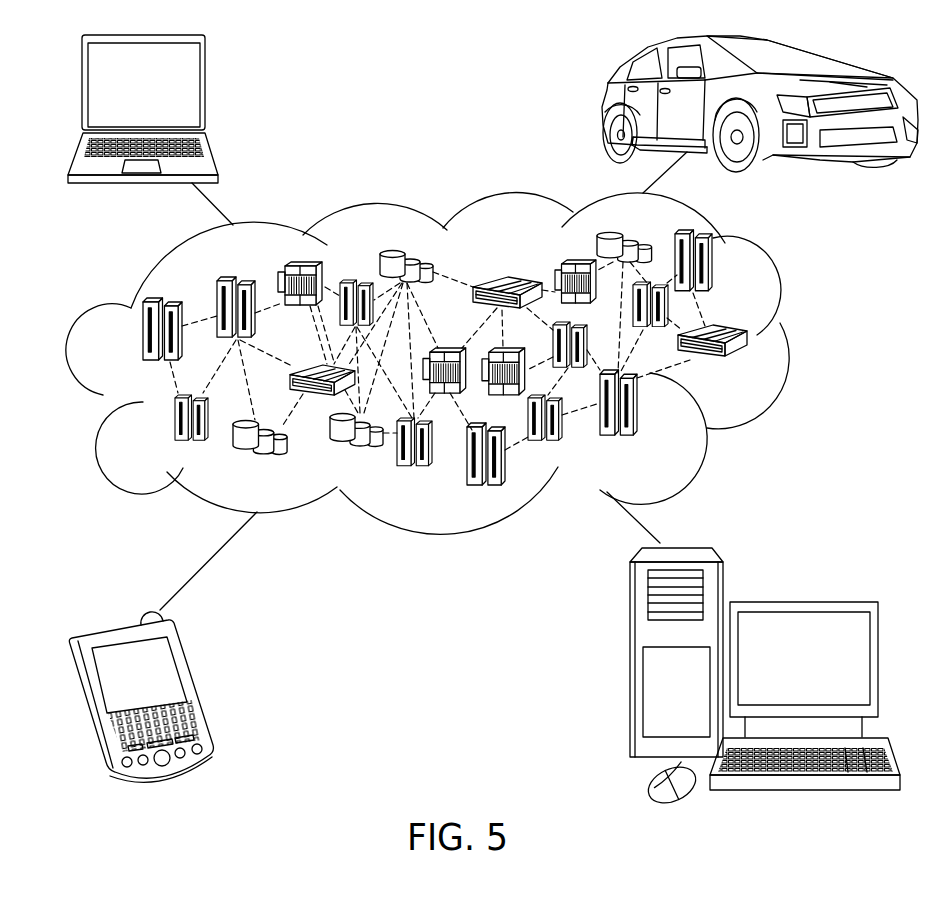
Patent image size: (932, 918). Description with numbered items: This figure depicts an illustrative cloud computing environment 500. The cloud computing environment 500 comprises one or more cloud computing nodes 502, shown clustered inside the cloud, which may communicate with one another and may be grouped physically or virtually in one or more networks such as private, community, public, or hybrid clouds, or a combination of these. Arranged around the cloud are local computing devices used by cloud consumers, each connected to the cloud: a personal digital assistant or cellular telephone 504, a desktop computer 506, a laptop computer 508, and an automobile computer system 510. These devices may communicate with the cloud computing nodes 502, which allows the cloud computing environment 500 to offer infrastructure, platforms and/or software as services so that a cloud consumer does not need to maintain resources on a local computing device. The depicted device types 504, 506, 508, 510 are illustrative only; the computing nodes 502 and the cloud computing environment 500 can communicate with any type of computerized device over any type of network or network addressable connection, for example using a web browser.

The cloud computing environment 500 is at (802, 340).
The cloud computing nodes 502 is at (759, 373).
The personal digital assistant or cellular telephone 504 is at (197, 687).
The desktop computer 506 is at (802, 602).
The laptop computer 508 is at (205, 90).
The automobile computer system 510 is at (602, 108).